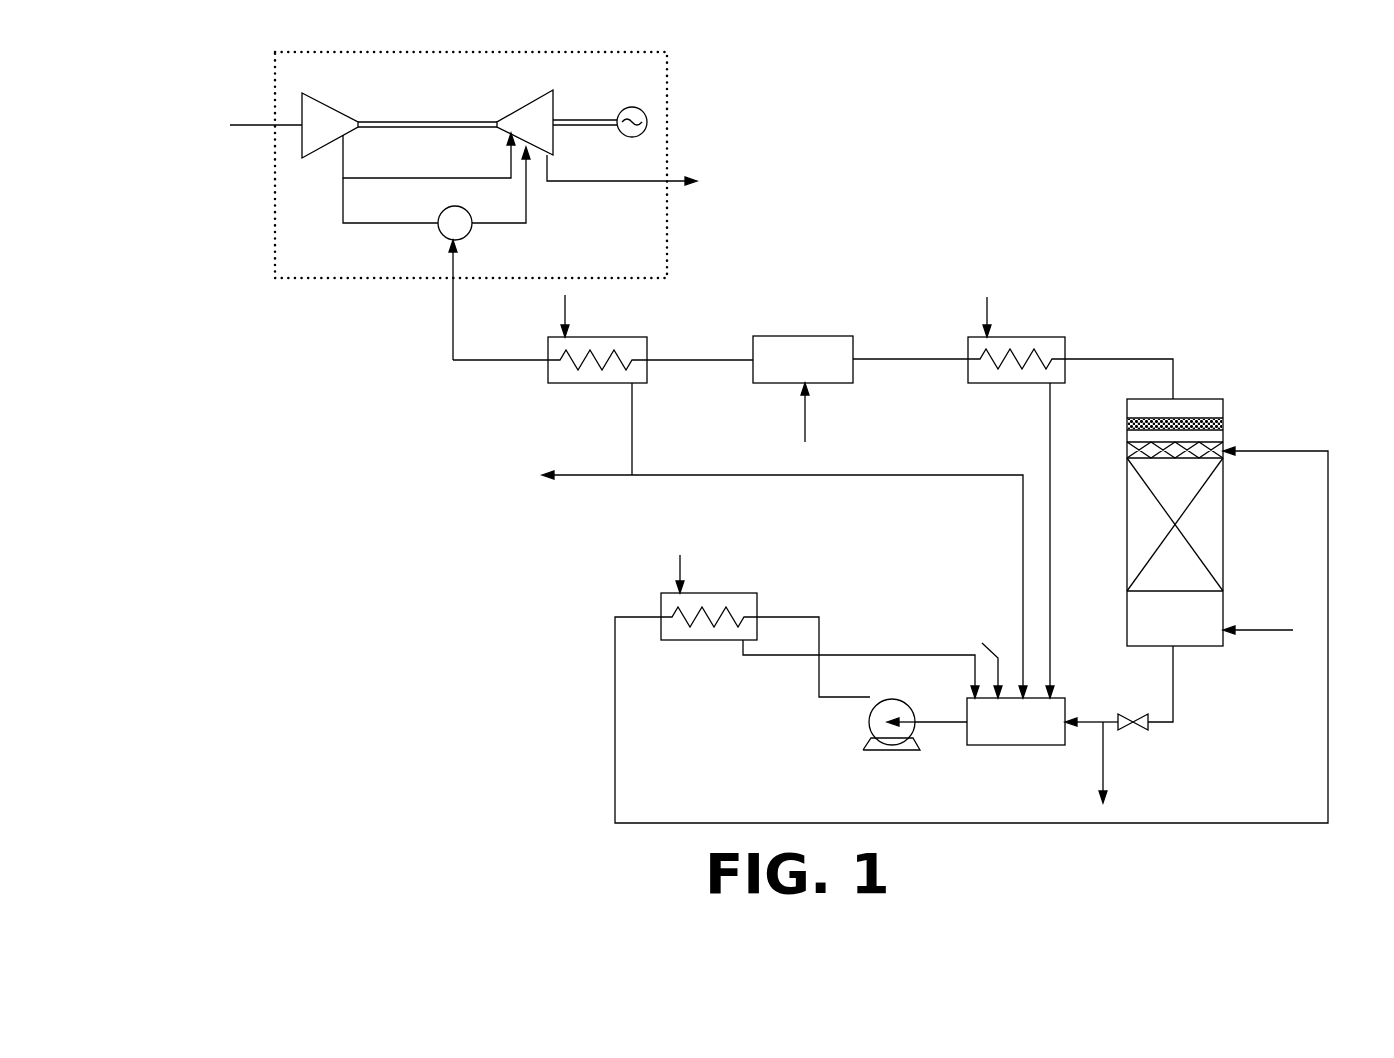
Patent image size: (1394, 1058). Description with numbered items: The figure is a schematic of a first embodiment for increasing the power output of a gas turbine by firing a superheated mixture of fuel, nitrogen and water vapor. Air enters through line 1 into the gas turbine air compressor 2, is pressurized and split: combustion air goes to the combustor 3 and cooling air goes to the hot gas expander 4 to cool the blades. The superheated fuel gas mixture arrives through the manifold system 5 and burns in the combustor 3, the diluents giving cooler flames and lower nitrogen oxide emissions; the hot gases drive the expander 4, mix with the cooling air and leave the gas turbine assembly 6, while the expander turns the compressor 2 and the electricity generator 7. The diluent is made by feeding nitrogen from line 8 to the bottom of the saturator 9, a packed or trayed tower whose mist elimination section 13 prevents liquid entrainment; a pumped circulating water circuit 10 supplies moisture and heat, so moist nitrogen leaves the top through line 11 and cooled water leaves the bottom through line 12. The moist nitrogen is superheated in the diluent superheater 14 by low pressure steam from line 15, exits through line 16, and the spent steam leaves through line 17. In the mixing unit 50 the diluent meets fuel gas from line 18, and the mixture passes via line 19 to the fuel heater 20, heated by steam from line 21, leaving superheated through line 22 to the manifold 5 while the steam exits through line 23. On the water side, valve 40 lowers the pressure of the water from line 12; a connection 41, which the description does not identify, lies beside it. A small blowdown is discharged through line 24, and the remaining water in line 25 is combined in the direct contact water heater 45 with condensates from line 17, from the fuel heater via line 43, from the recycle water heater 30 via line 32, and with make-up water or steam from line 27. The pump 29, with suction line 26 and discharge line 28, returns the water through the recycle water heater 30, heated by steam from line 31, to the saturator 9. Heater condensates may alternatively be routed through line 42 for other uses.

The air line 1 is at (240, 121).
The gas turbine air compressor 2 is at (327, 100).
The combustor 3 is at (475, 206).
The hot gas expander 4 is at (560, 98).
The manifold system 5 is at (462, 268).
The gas turbine assembly 6 is at (500, 46).
The electricity generator 7 is at (630, 101).
The nitrogen line 8 is at (1248, 620).
The saturator 9 is at (1233, 525).
The pumped circulating water circuit 10 is at (1338, 588).
The saturator overhead line 11 is at (1180, 378).
The saturator bottom water line 12 is at (1178, 688).
The mist elimination section 13 is at (1228, 420).
The diluent superheater 14 is at (1033, 328).
The low pressure steam line 15 is at (980, 298).
The superheated diluent line 16 is at (885, 350).
The steam/condensate line 17 is at (1058, 430).
The fuel gas line 18 is at (810, 425).
The fuel mixture line 19 is at (683, 355).
The fuel heater 20 is at (613, 330).
The low pressure steam line 21 is at (570, 307).
The superheated fuel gas line 22 is at (507, 365).
The steam/condensate line 23 is at (642, 455).
The blowdown line 24 is at (1108, 768).
The recycle water line 25 is at (1093, 713).
The suction line 26 is at (942, 730).
The make-up water line 27 is at (983, 656).
The discharge line 28 is at (830, 700).
The pump 29 is at (905, 695).
The recycle water heater 30 is at (723, 590).
The low pressure steam line 31 is at (673, 565).
The steam/condensate line 32 is at (860, 650).
The valve 40 is at (1150, 733).
The line 41 is at (1110, 713).
The line for other uses 42 is at (582, 483).
The fuel heater steam/condensate line 43 is at (872, 480).
The direct contact water heater 45 is at (1003, 748).
The mixing unit 50 is at (797, 330).